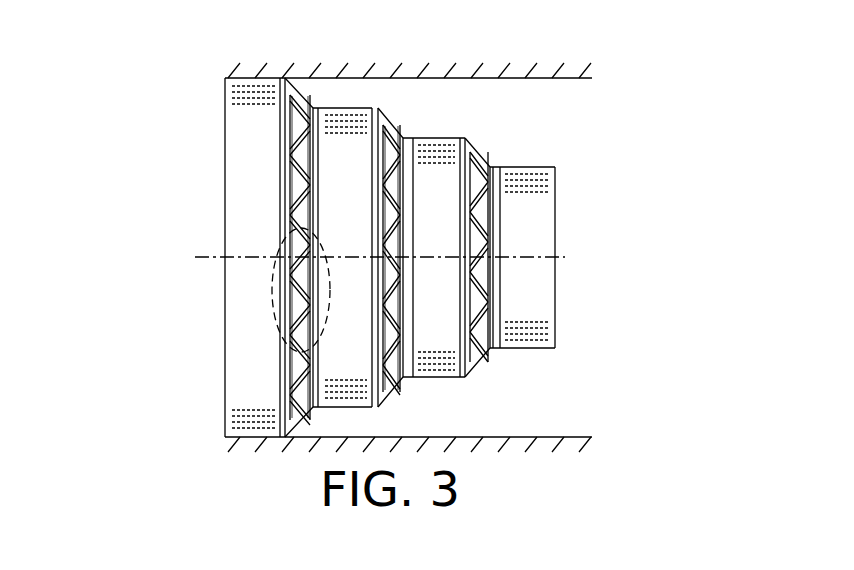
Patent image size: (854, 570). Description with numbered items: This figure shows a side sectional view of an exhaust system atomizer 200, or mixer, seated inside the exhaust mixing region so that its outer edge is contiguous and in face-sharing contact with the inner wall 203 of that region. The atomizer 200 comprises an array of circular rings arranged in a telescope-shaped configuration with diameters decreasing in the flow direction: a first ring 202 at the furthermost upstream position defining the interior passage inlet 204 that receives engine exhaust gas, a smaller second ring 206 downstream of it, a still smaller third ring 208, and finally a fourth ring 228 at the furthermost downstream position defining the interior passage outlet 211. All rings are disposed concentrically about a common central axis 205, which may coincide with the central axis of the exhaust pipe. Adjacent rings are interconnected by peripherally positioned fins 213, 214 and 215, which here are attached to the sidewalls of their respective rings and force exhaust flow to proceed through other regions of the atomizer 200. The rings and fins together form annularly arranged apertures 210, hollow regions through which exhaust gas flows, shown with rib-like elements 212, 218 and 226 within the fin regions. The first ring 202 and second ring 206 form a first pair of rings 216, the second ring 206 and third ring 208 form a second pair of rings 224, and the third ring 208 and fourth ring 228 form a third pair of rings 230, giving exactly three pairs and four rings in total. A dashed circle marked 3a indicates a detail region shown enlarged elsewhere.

The exhaust system atomizer 200 is at (625, 115).
The first ring 202 is at (278, 74).
The inner wall 203 is at (565, 75).
The interior passage inlet 204 is at (205, 177).
The central axis 205 is at (212, 255).
The second ring 206 is at (347, 108).
The third ring 208 is at (428, 138).
The apertures 210 is at (405, 180).
The interior passage outlet 211 is at (575, 307).
The lower spring portion 212 is at (310, 348).
The fin 213 is at (295, 170).
The fin 214 is at (395, 140).
The fin 215 is at (482, 203).
The first pair of rings 216 is at (343, 410).
The rib 218 is at (385, 290).
The second pair of rings 224 is at (357, 408).
The third spring lower portion 226 is at (470, 330).
The fourth ring 228 is at (525, 167).
The third pair of rings 230 is at (467, 365).
The detail region of FIG. 3a is at (272, 297).